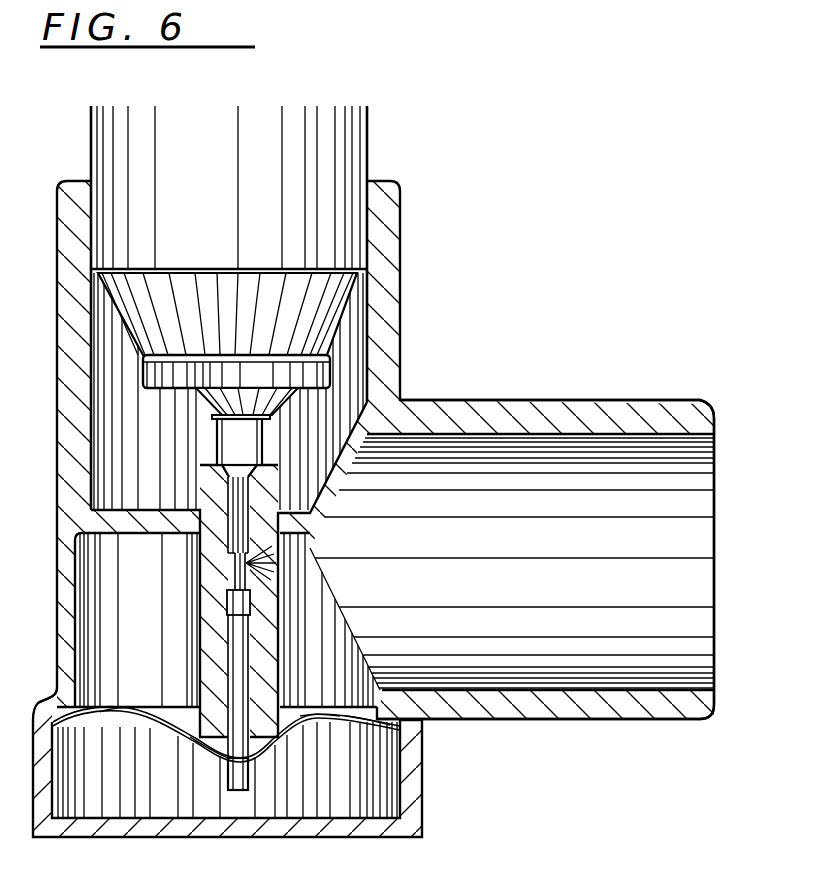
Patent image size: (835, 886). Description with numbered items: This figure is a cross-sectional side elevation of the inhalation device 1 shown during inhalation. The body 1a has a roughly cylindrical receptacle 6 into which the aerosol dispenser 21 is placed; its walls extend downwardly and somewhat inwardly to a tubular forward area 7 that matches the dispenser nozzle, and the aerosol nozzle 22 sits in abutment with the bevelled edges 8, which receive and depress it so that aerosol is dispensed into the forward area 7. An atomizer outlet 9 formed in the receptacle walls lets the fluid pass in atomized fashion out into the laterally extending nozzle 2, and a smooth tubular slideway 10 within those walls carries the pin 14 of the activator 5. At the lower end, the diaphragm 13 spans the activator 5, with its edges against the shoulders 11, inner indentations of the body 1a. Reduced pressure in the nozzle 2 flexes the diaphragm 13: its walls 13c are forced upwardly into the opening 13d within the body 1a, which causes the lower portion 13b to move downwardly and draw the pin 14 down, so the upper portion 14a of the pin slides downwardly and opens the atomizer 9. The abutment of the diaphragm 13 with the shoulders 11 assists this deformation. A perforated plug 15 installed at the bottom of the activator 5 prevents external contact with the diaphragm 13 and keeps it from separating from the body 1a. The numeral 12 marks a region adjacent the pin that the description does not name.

The inhalation device 1 is at (490, 262).
The body 1a is at (610, 399).
The nozzle 2 is at (685, 505).
The activator 5 is at (410, 815).
The receptacle 6 is at (352, 337).
The forward area 7 is at (240, 500).
The bevelled edges 8 is at (218, 446).
The atomizer outlet 9 is at (270, 565).
The slideway 10 is at (230, 647).
The shoulders 11 is at (53, 693).
The valve seat 12 is at (247, 528).
The diaphragm 13 is at (282, 760).
The lower portion of diaphragm 13b is at (207, 752).
The walls of diaphragm 13c is at (118, 710).
The opening 13d is at (357, 697).
The pin 14 is at (240, 790).
The upper portion of pin 14a is at (250, 607).
The perforated plug 15 is at (363, 828).
The aerosol dispenser 21 is at (90, 132).
The aerosol nozzle 22 is at (258, 440).